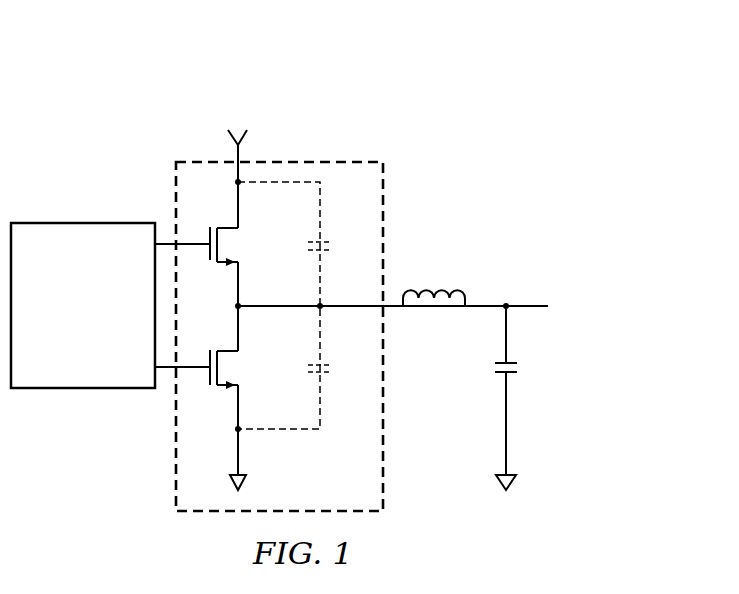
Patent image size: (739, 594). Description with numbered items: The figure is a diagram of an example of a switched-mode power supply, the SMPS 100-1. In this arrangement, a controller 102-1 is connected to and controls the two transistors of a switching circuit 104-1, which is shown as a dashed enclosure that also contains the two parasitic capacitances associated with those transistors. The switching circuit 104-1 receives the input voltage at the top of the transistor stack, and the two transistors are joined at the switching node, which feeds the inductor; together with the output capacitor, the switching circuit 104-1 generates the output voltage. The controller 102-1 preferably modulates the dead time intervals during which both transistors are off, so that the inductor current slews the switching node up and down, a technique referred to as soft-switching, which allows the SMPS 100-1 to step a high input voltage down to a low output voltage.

The SMPS 100-1 is at (152, 70).
The controller 102-1 is at (110, 337).
The switching circuit 104-1 is at (342, 151).